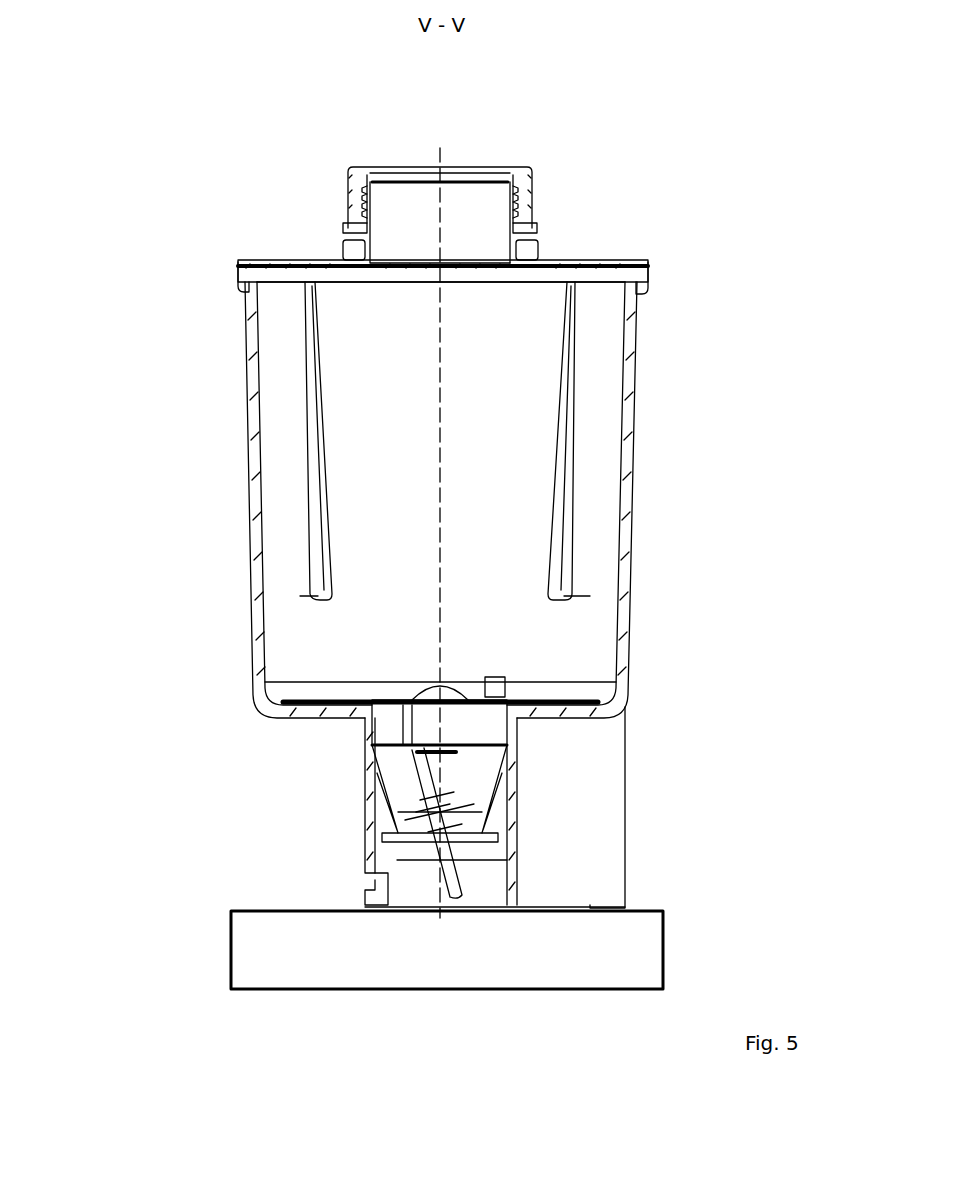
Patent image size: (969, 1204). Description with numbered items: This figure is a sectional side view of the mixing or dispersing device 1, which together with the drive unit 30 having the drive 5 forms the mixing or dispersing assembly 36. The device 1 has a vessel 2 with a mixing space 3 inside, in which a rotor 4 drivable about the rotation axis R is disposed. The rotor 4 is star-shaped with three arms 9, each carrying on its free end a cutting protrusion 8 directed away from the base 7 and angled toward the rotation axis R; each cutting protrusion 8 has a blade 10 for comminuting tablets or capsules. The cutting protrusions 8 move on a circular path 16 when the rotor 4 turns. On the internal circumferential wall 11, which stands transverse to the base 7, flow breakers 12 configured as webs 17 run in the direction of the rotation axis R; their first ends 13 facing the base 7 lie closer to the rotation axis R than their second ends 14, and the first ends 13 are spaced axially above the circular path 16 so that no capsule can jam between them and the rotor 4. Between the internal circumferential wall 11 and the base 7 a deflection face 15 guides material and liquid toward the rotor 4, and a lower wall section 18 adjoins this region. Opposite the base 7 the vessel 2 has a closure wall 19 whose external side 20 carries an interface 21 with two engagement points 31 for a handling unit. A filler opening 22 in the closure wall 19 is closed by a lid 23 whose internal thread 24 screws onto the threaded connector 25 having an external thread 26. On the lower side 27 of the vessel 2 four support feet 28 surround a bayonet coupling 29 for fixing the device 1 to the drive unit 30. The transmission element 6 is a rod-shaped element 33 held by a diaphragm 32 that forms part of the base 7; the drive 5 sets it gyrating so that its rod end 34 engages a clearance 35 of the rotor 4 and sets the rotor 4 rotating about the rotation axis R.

The mixing or dispersing device 1 is at (140, 186).
The vessel 2 is at (637, 378).
The mixing space 3 is at (602, 549).
The rotor 4 is at (412, 625).
The drive 5 is at (540, 948).
The transmission element 6 is at (509, 799).
The base 7 is at (330, 697).
The cutting protrusions 8 is at (318, 700).
The arms 9 is at (356, 738).
The blade 10 is at (372, 630).
The internal circumferential wall 11 is at (262, 660).
The flow breakers 12 is at (308, 486).
The first ends 13 is at (322, 592).
The second ends 14 is at (240, 266).
The deflection face 15 is at (262, 720).
The circular path 16 is at (455, 664).
The webs 17 is at (322, 522).
The lower wall section 18 is at (255, 690).
The closure wall 19 is at (636, 262).
The external side 20 is at (610, 236).
The interface 21 is at (347, 200).
The filler opening 22 is at (413, 212).
The lid 23 is at (390, 175).
The internal thread 24 is at (522, 172).
The threaded connector 25 is at (350, 185).
The external thread 26 is at (530, 208).
The lower side 27 is at (598, 720).
The support feet 28 is at (598, 878).
The bayonet coupling 29 is at (375, 883).
The drive unit 30 is at (282, 938).
The engagement points 31 is at (343, 250).
The diaphragm 32 is at (438, 828).
The rod-shaped element 33 is at (505, 855).
The rod end 34 is at (498, 792).
The clearance 35 is at (507, 760).
The mixing or dispersing assembly 36 is at (780, 348).
The rotation axis R is at (445, 152).